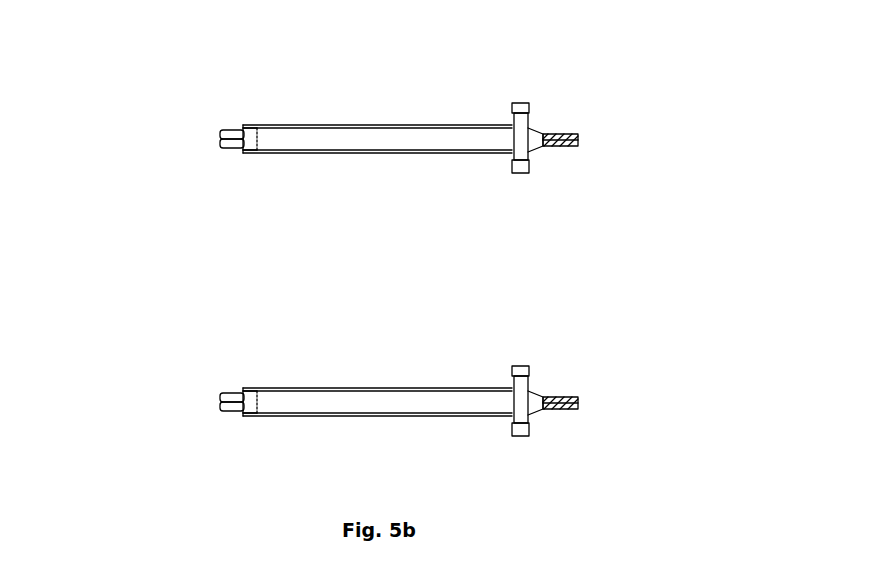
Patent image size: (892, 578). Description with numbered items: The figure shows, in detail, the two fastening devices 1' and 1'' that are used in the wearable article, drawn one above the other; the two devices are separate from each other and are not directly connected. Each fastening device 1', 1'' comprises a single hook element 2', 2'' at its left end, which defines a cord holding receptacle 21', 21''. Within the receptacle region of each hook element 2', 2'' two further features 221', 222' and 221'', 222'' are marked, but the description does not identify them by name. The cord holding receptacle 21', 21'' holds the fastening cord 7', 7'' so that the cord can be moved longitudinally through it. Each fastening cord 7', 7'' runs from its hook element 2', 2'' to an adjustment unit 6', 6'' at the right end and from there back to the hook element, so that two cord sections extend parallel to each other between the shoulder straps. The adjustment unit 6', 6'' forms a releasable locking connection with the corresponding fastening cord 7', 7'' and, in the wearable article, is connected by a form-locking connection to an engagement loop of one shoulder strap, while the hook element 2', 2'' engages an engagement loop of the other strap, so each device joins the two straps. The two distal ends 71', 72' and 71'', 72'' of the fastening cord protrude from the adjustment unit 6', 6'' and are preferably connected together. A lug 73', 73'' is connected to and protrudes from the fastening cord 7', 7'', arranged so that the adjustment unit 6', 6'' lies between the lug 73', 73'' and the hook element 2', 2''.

The fastening device 1' is at (408, 147).
The hook element 2' is at (164, 102).
The cord holding receptacle 21' is at (174, 176).
The first connector part 221' is at (165, 113).
The second connector part 222' is at (164, 156).
The adjustment unit 6' is at (572, 101).
The fastening cord 7' is at (377, 200).
The distal end of the fastening cord 71' is at (614, 103).
The distal end of the fastening cord 72' is at (601, 182).
The lug 73' is at (637, 125).
The fastening device 1'' is at (412, 394).
The hook element 2'' is at (164, 365).
The cord holding receptacle 21'' is at (174, 443).
The first connector part 221'' is at (166, 378).
The second connector part 222'' is at (164, 419).
The adjustment unit 6'' is at (585, 365).
The fastening cord 7'' is at (352, 452).
The distal end of the fastening cord 71'' is at (617, 378).
The distal end of the fastening cord 72'' is at (603, 449).
The lug 73'' is at (641, 392).